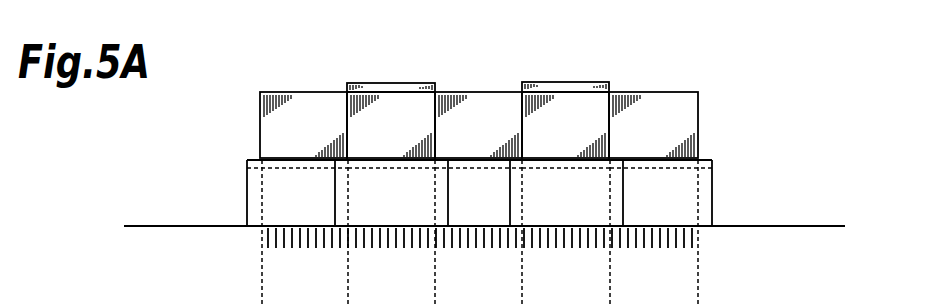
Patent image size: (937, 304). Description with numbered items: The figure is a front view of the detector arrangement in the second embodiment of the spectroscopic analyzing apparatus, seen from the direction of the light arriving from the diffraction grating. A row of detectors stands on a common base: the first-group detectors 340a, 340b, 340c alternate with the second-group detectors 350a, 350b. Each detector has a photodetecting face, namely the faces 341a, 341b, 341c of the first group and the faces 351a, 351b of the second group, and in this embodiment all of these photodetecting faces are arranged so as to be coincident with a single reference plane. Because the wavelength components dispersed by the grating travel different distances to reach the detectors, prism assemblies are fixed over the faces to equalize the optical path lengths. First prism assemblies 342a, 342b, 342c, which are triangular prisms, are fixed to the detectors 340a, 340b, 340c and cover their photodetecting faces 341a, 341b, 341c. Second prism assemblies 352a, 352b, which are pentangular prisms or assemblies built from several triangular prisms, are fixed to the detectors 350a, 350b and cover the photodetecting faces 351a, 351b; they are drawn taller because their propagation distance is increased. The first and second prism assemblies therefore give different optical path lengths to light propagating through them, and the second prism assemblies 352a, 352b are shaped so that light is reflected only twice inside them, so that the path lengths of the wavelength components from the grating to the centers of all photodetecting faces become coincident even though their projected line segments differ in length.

The detector 340a is at (248, 205).
The detector 340b is at (476, 218).
The detector 340c is at (712, 219).
The photodetecting face 341a is at (248, 168).
The photodetecting face 341b is at (477, 172).
The photodetecting face 341c is at (670, 168).
The first prism assembly 342a is at (307, 91).
The first prism assembly 342b is at (483, 91).
The first prism assembly 342c is at (655, 91).
The detector 350a is at (390, 218).
The detector 350b is at (563, 218).
The photodetecting face 351a is at (388, 172).
The photodetecting face 351b is at (563, 172).
The second prism assembly 352a is at (397, 83).
The second prism assembly 352b is at (572, 82).